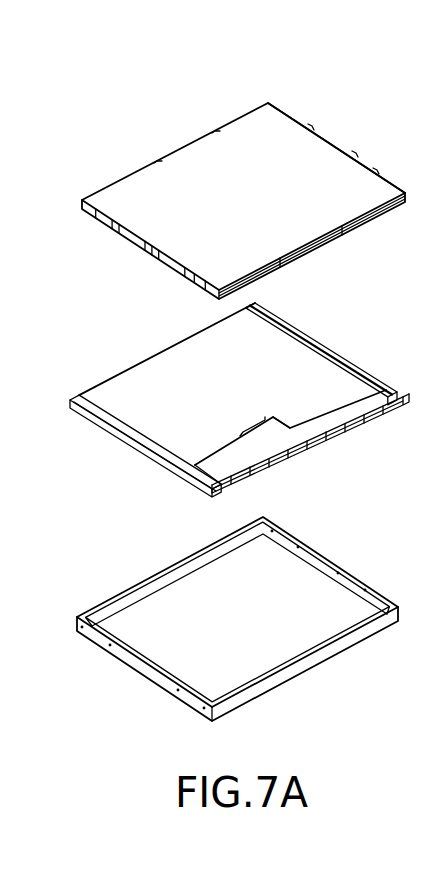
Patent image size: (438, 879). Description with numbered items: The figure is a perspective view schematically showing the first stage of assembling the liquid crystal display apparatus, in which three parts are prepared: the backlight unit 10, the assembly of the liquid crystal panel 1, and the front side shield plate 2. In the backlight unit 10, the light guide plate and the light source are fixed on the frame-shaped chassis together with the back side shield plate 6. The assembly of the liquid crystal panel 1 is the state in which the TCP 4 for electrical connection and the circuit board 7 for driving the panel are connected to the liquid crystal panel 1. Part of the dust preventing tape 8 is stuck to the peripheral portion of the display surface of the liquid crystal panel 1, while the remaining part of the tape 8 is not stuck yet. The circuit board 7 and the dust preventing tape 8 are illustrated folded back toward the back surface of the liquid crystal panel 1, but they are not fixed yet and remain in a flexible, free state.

The backlight unit 10 is at (312, 120).
The back side shield plate 6 is at (320, 167).
The liquid crystal panel 1 is at (124, 368).
The dust preventing tape 8 is at (313, 337).
The TCP 4 is at (347, 430).
The circuit board 7 is at (257, 447).
The front side shield plate 2 is at (105, 607).